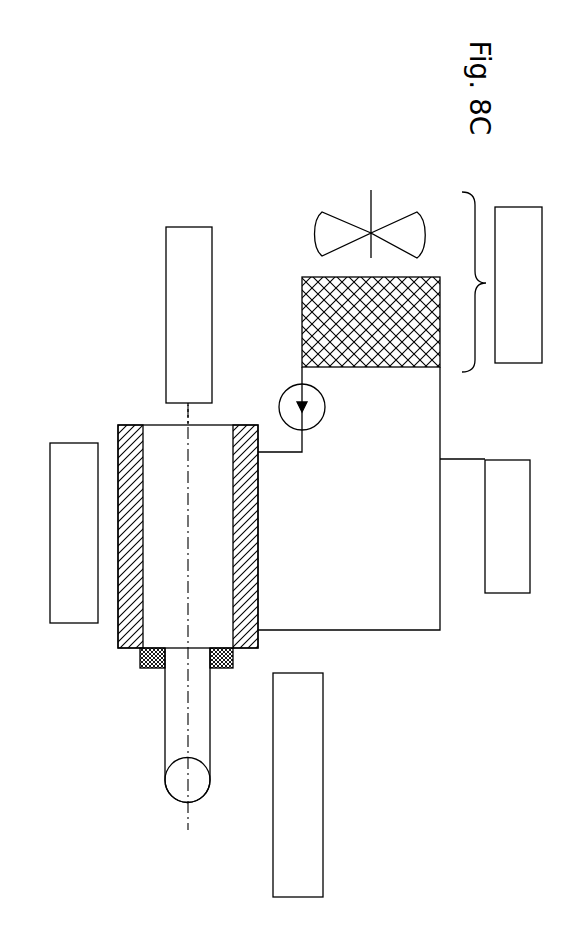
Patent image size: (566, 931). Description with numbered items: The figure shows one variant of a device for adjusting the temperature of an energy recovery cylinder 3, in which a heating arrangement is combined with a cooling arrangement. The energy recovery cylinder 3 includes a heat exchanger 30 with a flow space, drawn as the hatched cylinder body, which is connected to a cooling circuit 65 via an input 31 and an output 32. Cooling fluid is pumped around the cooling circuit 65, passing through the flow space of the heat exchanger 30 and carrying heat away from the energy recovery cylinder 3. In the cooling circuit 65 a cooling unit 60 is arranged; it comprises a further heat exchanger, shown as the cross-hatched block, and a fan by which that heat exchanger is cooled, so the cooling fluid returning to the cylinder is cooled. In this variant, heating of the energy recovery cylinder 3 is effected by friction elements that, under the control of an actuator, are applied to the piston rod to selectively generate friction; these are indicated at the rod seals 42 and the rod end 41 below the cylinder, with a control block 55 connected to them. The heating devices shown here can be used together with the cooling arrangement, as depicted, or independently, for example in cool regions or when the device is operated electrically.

The energy recovery cylinder 3 is at (189, 326).
The heat exchanger 30 is at (117, 443).
The input 31 is at (268, 460).
The output 32 is at (265, 612).
The piston rod end 41 is at (210, 760).
The seal 42 is at (132, 663).
The sensor 55 is at (236, 671).
The cooling unit 60 is at (422, 281).
The cooling circuit 65 is at (404, 488).